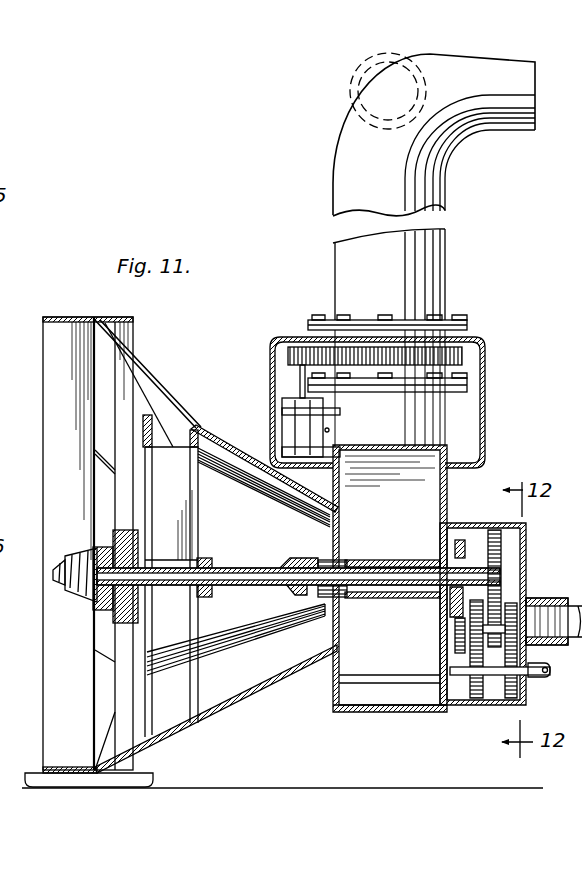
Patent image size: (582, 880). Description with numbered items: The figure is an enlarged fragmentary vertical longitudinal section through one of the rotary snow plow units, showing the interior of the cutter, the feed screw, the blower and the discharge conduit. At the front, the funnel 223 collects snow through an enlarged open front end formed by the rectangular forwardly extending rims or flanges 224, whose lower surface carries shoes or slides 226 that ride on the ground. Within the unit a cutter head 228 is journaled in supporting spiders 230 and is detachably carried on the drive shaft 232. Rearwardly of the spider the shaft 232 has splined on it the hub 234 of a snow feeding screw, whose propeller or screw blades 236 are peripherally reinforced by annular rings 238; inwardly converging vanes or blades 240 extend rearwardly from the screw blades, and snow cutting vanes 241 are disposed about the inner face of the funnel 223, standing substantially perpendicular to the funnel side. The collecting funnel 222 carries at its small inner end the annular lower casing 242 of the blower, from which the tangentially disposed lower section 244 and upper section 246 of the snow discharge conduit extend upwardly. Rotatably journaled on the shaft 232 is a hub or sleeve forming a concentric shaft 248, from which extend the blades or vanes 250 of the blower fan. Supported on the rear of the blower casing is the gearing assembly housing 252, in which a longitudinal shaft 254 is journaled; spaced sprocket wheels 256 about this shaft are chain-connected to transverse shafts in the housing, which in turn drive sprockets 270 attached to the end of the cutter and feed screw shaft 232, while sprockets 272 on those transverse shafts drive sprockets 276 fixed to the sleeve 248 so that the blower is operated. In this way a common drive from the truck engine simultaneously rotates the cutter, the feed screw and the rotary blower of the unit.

The collecting funnel 222 is at (252, 707).
The funnel 223 is at (163, 751).
The rims or flanges 224 is at (0, 312).
The shoes or slides 226 is at (80, 775).
The cutter head 228 is at (80, 600).
The supporting spiders 230 is at (123, 497).
The drive shaft 232 is at (248, 582).
The hub 234 is at (199, 596).
The propeller or screw blades 236 is at (199, 525).
The annular rings 238 is at (193, 428).
The inwardly converging vanes or blades 240 is at (237, 632).
The snow cutting vanes 241 is at (15, 518).
The annular lower casing 242 is at (384, 713).
The lower section of the snow discharge conduit 244 is at (433, 427).
The upper section of the snow discharge conduit 246 is at (435, 277).
The concentric shaft 248 is at (376, 600).
The blades or vanes of the blower fan 250 is at (424, 522).
The gearing assembly housing 252 is at (526, 549).
The longitudinal shaft 254 is at (495, 672).
The sprocket wheels 256 is at (531, 680).
The sprockets 270 is at (501, 573).
The sprockets 272 is at (446, 631).
The sprockets 276 is at (468, 533).